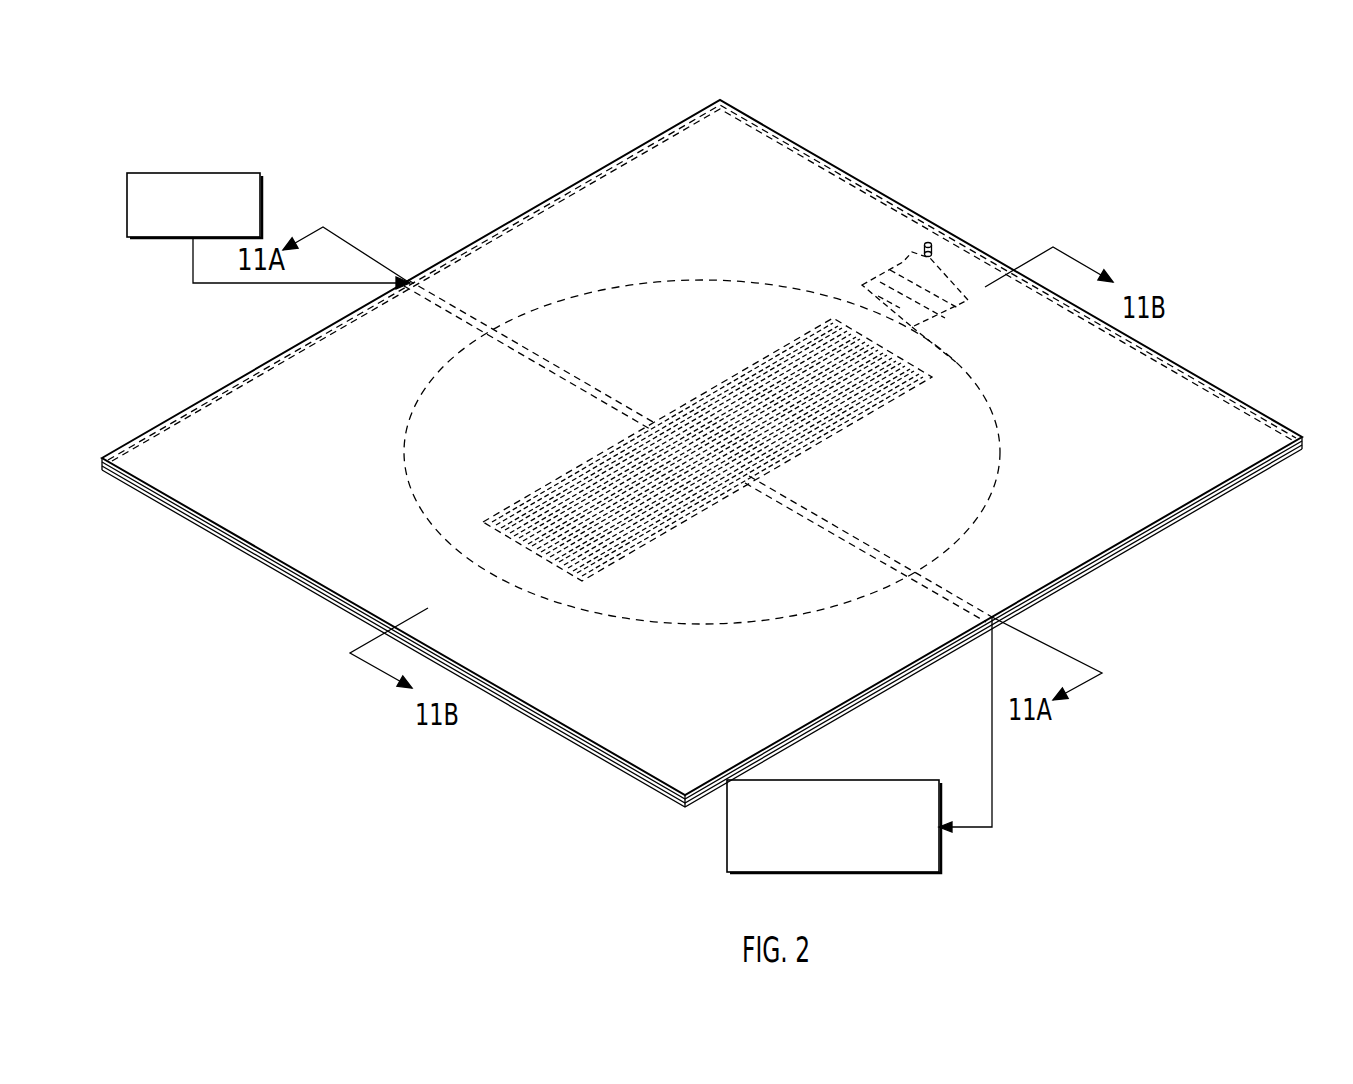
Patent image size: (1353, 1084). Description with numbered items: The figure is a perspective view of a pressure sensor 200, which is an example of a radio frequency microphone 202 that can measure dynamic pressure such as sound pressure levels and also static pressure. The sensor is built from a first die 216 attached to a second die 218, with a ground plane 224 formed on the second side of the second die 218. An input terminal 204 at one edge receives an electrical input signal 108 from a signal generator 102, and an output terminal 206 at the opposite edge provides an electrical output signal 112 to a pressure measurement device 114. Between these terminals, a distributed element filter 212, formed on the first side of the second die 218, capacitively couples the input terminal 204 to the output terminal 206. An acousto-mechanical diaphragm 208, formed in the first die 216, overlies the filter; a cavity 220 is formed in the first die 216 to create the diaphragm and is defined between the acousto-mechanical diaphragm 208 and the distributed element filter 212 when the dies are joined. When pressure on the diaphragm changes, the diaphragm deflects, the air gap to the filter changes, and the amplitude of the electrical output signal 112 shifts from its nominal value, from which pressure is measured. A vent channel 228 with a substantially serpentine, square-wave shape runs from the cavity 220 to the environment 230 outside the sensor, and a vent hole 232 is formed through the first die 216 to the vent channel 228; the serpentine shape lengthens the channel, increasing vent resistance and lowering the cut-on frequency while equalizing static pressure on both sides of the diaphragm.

The pressure sensor 200 is at (841, 104).
The radio frequency (RF) microphone 202 is at (884, 187).
The environment 230 is at (501, 172).
The signal generator 102 is at (190, 173).
The electrical input signal 108 is at (250, 284).
The input terminal 204 is at (410, 286).
The output terminal 206 is at (992, 615).
The acousto-mechanical diaphragm 208 is at (995, 410).
The distributed element filter 212 is at (602, 452).
The vent channel 228 is at (866, 274).
The vent hole 232 is at (924, 245).
The cavity 220 is at (683, 612).
The first die 216 is at (158, 493).
The second die 218 is at (233, 547).
The ground plane 224 is at (300, 592).
The electrical output signal 112 is at (992, 688).
The pressure measurement device 114 is at (833, 780).